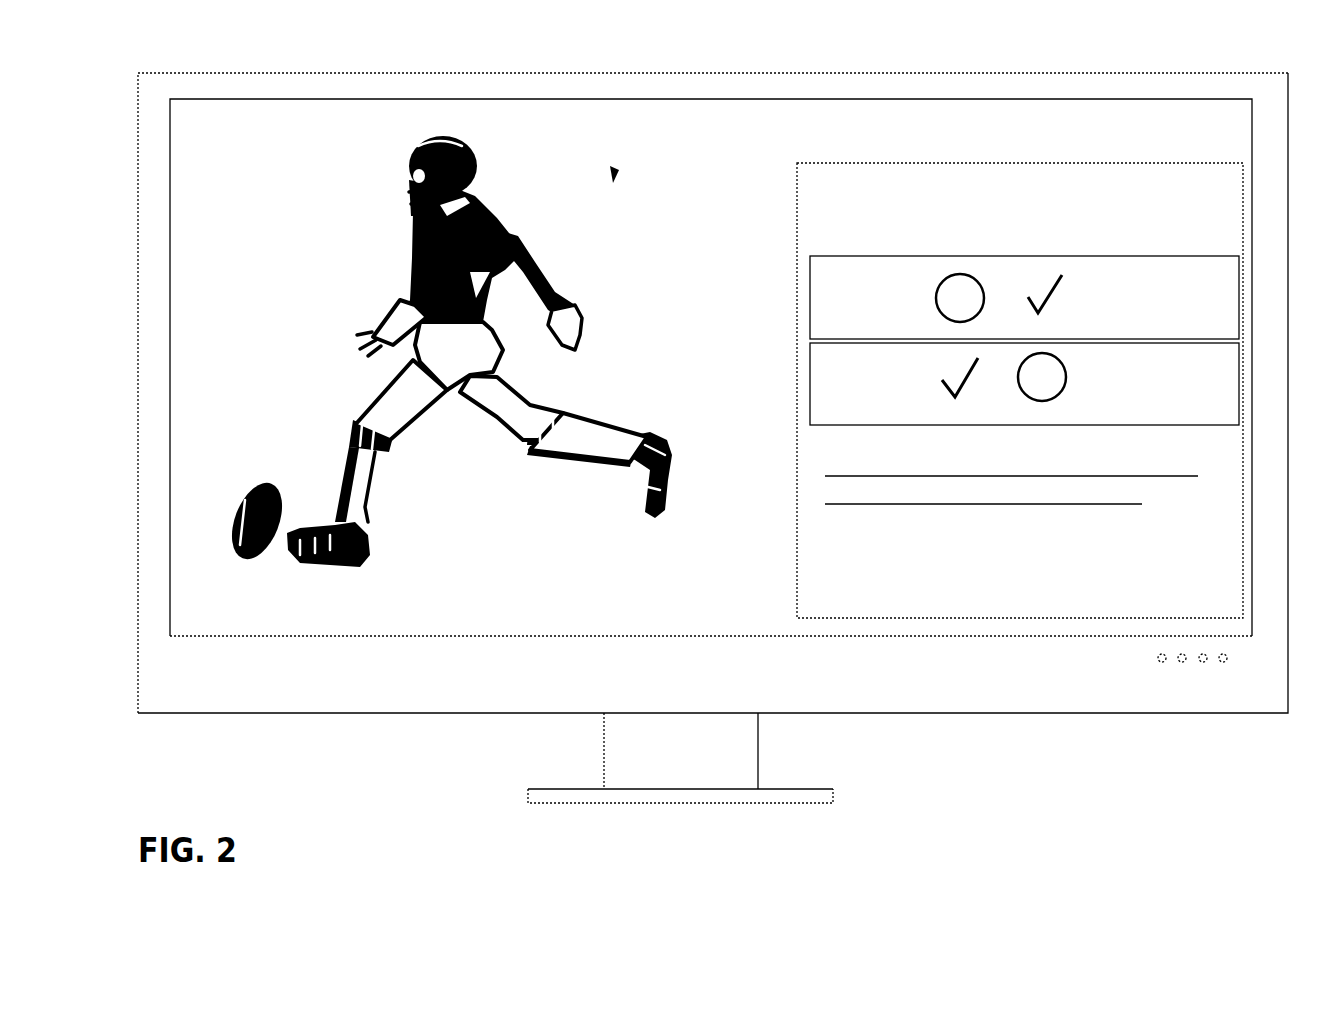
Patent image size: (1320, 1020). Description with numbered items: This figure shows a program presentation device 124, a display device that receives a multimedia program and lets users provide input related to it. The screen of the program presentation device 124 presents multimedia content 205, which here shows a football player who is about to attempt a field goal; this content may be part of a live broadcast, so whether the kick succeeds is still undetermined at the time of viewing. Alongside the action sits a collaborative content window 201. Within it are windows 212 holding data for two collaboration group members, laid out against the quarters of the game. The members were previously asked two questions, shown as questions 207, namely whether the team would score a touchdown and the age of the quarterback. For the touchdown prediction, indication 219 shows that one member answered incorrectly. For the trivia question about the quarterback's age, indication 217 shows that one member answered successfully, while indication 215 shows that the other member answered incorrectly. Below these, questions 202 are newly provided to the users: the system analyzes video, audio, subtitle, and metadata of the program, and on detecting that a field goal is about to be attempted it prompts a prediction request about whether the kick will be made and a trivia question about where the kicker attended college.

The program presentation device 124 is at (1254, 72).
The collaborative content window 201 is at (1034, 163).
The multimedia content 205 is at (620, 172).
The windows 212 is at (778, 433).
The indication 219 is at (983, 288).
The indication 217 is at (1060, 290).
The indication 215 is at (1068, 373).
The questions 207 is at (783, 467).
The questions 202 is at (790, 590).